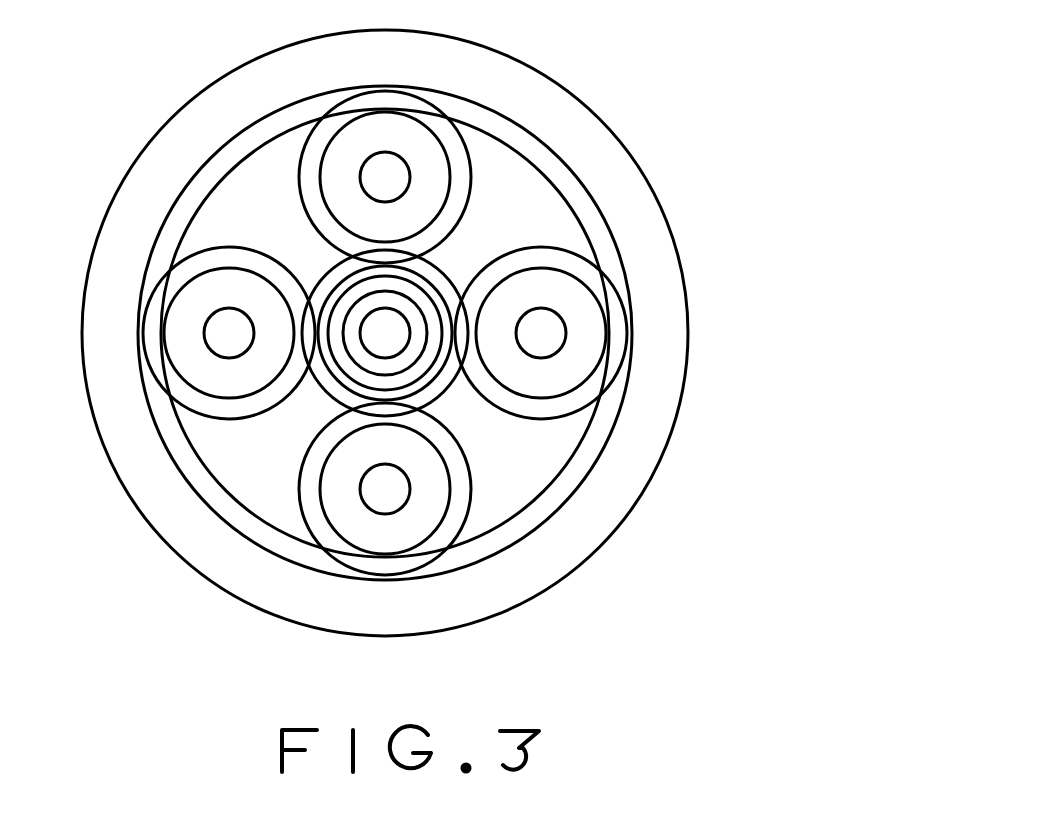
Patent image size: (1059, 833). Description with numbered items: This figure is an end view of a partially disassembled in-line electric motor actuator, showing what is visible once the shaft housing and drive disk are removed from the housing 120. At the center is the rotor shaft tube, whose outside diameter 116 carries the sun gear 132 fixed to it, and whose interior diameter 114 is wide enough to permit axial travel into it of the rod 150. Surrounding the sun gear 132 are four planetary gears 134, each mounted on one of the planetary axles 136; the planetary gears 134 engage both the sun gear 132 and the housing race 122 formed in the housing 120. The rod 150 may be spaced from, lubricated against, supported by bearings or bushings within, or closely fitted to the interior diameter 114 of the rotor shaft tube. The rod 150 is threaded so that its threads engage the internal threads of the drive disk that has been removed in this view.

The housing 120 is at (122, 164).
The housing race 122 is at (223, 162).
The sun gear 132 is at (433, 275).
The rod 150 is at (388, 330).
The planetary axles 136 is at (229, 335).
The planetary gears 134 is at (197, 368).
The interior diameter of rotor shaft tube 114 is at (362, 366).
The outside diameter of rotor shaft tube 116 is at (433, 363).